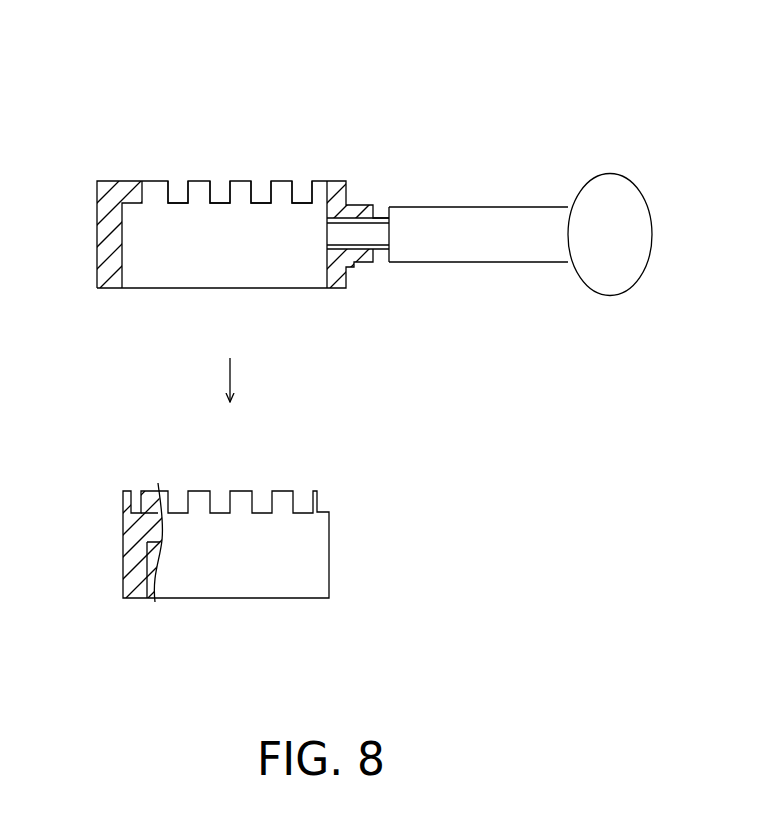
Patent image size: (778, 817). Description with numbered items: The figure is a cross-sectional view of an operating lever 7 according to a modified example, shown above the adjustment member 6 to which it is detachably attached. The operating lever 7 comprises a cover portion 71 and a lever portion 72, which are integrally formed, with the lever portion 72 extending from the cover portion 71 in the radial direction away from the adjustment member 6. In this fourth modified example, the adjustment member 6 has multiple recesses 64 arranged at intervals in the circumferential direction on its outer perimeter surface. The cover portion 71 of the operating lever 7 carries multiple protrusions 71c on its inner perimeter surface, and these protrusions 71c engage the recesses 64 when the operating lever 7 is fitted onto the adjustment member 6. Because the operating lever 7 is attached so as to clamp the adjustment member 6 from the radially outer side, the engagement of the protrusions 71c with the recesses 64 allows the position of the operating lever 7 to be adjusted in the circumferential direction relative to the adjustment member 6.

The operating lever 7 is at (326, 155).
The cover portion 71 is at (333, 182).
The protrusions 71c is at (238, 182).
The lever portion 72 is at (522, 207).
The adjustment member 6 is at (203, 488).
The recesses 64 is at (130, 492).